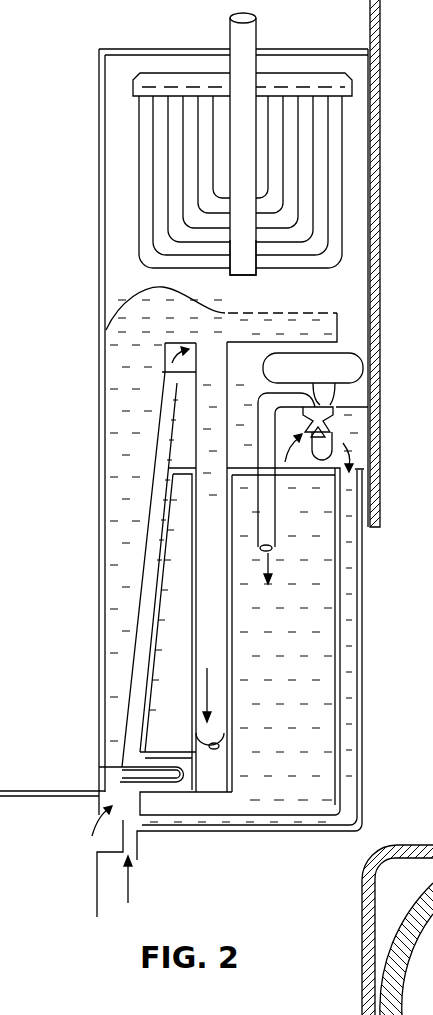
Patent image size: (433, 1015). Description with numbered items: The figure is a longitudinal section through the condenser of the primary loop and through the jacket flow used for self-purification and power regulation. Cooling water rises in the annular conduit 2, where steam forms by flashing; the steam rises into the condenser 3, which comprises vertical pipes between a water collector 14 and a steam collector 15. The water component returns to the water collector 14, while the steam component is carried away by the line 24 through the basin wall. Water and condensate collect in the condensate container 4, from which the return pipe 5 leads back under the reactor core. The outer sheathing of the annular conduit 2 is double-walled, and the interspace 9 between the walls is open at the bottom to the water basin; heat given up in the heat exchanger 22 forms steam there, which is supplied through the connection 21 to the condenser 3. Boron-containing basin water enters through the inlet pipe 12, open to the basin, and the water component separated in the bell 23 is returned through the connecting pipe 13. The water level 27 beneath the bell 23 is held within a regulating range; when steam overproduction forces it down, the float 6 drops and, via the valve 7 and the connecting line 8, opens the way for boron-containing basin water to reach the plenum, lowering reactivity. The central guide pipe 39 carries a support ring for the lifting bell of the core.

The annular conduit 2 is at (122, 572).
The condenser 3 is at (354, 135).
The condensate container 4 is at (328, 313).
The return pipe 5 is at (210, 598).
The float 6 is at (344, 371).
The valve 7 is at (318, 412).
The connecting line 8 is at (268, 509).
The interspace 9 is at (148, 605).
The inlet pipe 12 is at (130, 843).
The connecting pipe 13 is at (353, 710).
The water collector 14 is at (249, 246).
The steam collector 15 is at (344, 90).
The connection 21 is at (359, 313).
The heat exchanger 22 is at (197, 760).
The bell 23 is at (247, 360).
The line 24 is at (245, 36).
The water level 27 is at (237, 371).
The central guide pipe 39 is at (101, 458).